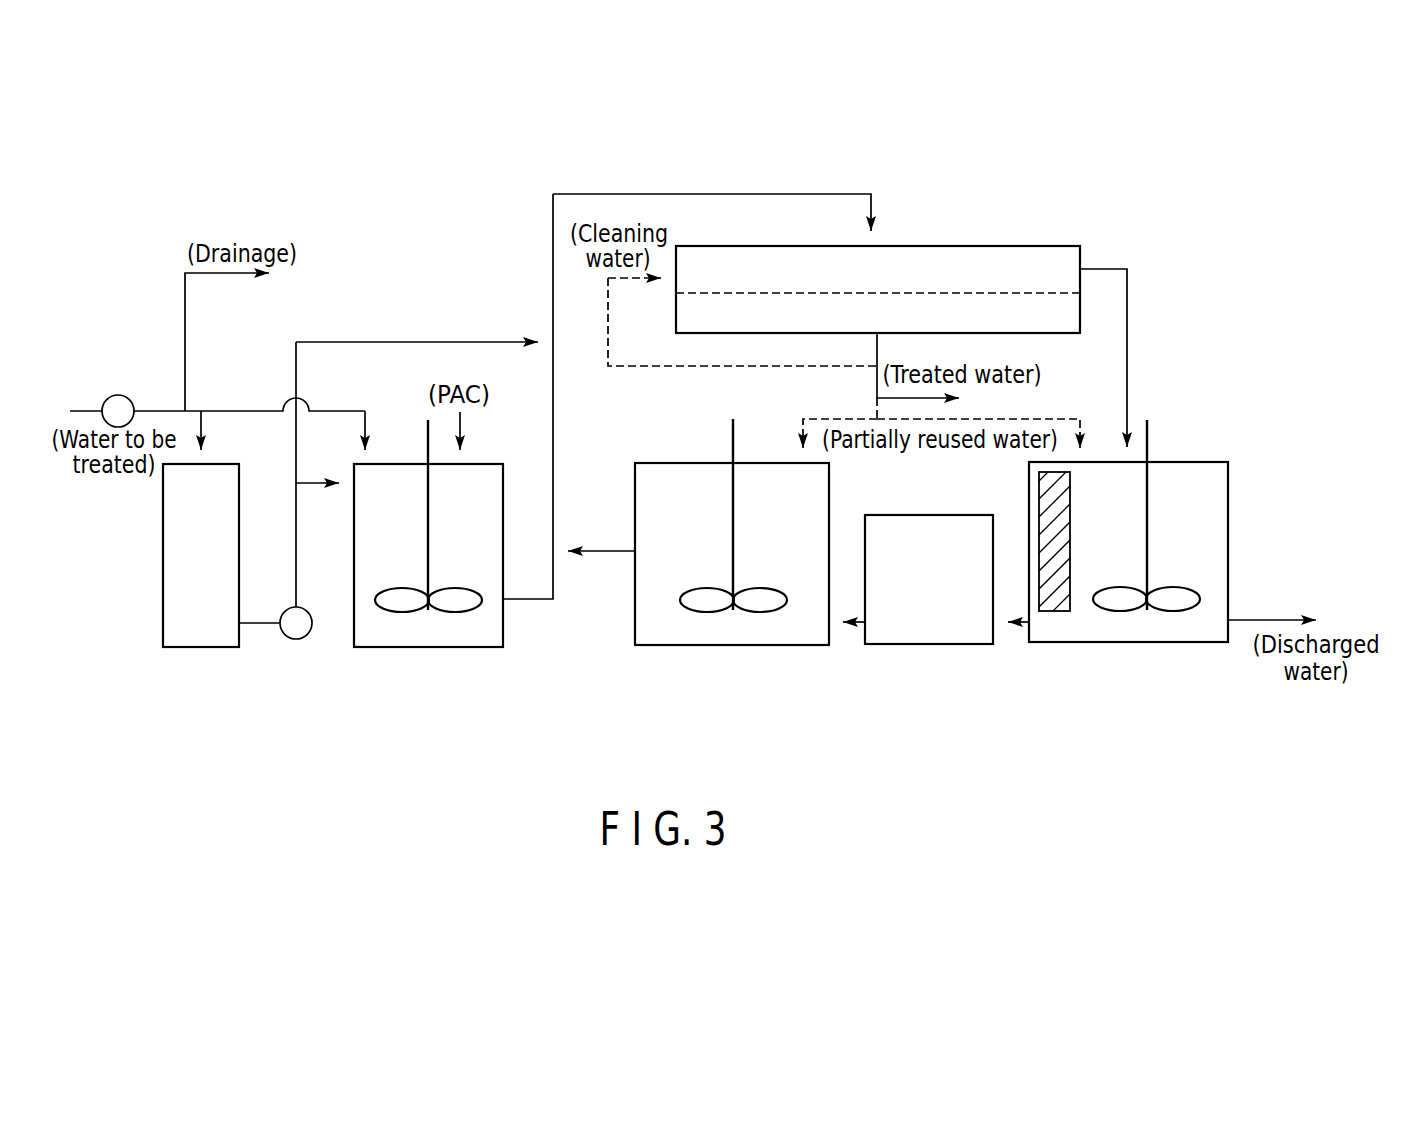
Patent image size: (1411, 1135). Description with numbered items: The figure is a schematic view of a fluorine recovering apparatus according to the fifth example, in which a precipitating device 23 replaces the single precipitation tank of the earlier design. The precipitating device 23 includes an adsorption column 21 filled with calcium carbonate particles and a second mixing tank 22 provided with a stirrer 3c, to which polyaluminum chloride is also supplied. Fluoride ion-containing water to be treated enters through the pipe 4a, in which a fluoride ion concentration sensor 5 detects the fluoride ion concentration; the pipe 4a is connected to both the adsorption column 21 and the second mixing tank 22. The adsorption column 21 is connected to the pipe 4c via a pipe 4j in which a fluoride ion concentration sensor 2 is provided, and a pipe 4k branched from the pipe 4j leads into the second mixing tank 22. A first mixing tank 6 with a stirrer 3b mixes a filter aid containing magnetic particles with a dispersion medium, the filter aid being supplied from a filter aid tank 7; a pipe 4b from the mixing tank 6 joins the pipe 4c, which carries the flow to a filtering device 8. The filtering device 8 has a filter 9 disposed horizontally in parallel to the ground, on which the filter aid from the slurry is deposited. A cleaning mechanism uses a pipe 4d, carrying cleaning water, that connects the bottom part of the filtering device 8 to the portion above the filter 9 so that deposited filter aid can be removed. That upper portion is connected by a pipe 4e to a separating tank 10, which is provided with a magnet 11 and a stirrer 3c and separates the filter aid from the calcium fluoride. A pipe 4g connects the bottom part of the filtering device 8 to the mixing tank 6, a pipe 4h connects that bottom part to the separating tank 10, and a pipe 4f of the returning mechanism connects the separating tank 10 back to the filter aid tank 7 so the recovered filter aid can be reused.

The fluoride ion concentration sensor 2 is at (309, 612).
The stirrer 3b is at (735, 533).
The stirrer 3c is at (430, 513).
The pipe 4a is at (84, 410).
The pipe 4b is at (598, 555).
The pipe 4c is at (627, 194).
The pipe 4d is at (647, 367).
The pipe 4e is at (1127, 330).
The pipe 4f is at (1017, 625).
The pipe 4g is at (830, 419).
The pipe 4h is at (1068, 419).
The pipe 4j is at (403, 341).
The pipe 4k is at (316, 483).
The fluoride ion concentration sensor 5 is at (118, 394).
The first mixing tank 6 is at (723, 645).
The filter aid tank 7 is at (922, 644).
The filtering device 8 is at (928, 246).
The filter 9 is at (1055, 291).
The separating tank 10 is at (1105, 642).
The magnet 11 is at (1070, 498).
The adsorption column 21 is at (163, 602).
The second mixing tank 22 is at (423, 647).
The precipitating device 23 is at (252, 730).